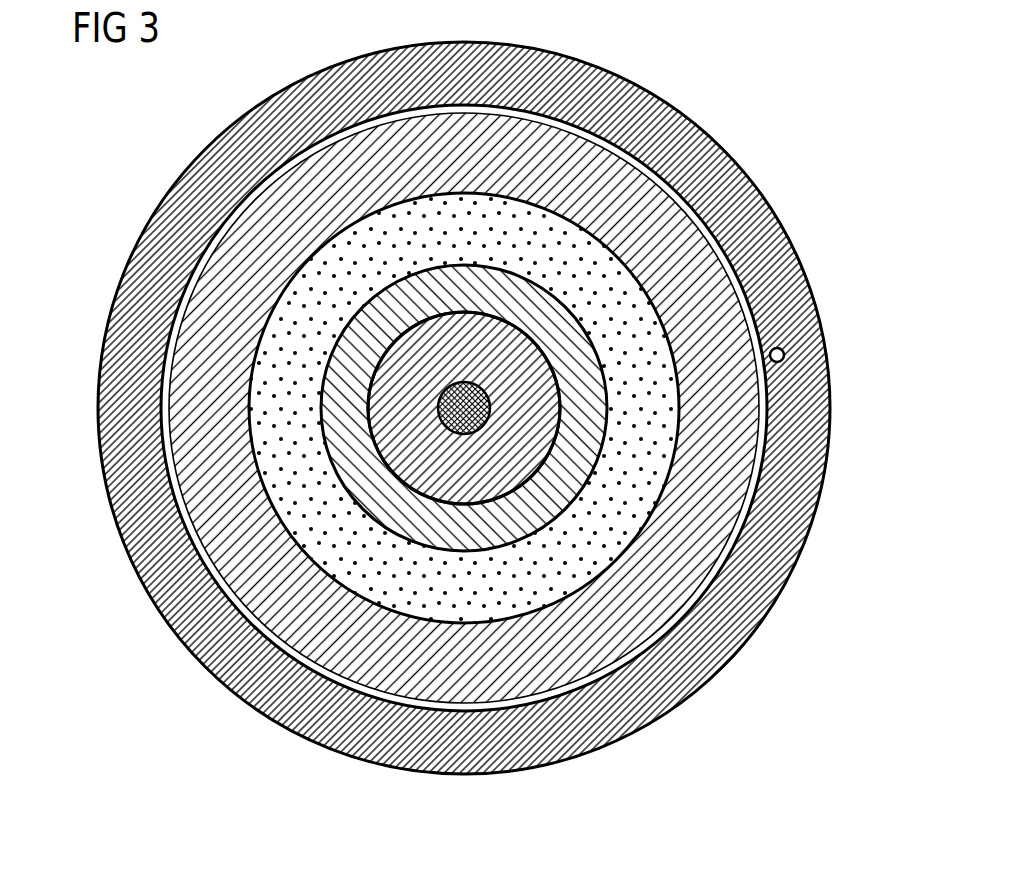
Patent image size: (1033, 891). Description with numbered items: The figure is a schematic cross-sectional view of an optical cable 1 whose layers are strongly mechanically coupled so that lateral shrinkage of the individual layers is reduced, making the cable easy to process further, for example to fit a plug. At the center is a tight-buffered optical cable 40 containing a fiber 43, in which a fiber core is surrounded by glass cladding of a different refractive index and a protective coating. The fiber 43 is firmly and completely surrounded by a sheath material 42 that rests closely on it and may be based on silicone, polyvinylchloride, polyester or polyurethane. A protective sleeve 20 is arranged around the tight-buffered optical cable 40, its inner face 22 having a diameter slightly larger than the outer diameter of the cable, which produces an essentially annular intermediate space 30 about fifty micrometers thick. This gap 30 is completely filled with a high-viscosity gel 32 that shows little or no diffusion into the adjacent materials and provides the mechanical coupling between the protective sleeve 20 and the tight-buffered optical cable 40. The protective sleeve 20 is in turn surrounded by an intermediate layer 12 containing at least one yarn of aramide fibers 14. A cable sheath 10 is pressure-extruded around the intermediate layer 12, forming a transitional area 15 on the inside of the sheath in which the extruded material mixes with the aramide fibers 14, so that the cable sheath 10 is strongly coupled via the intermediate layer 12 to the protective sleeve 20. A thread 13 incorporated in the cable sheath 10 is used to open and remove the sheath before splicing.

The component 1 is at (708, 94).
The cable sheath 10 is at (832, 407).
The intermediate layer 12 is at (202, 307).
The thread 13 is at (785, 355).
The aramide fibers 14 is at (687, 583).
The transitional area 15 is at (747, 505).
The protective sleeve 20 is at (513, 600).
The inner face 22 is at (390, 525).
The annular intermediate space 30 is at (580, 382).
The high-viscosity gel 32 is at (372, 495).
The tight-buffered optical cable 40 is at (372, 430).
The sheath material 42 is at (395, 385).
The fiber 43 is at (459, 406).